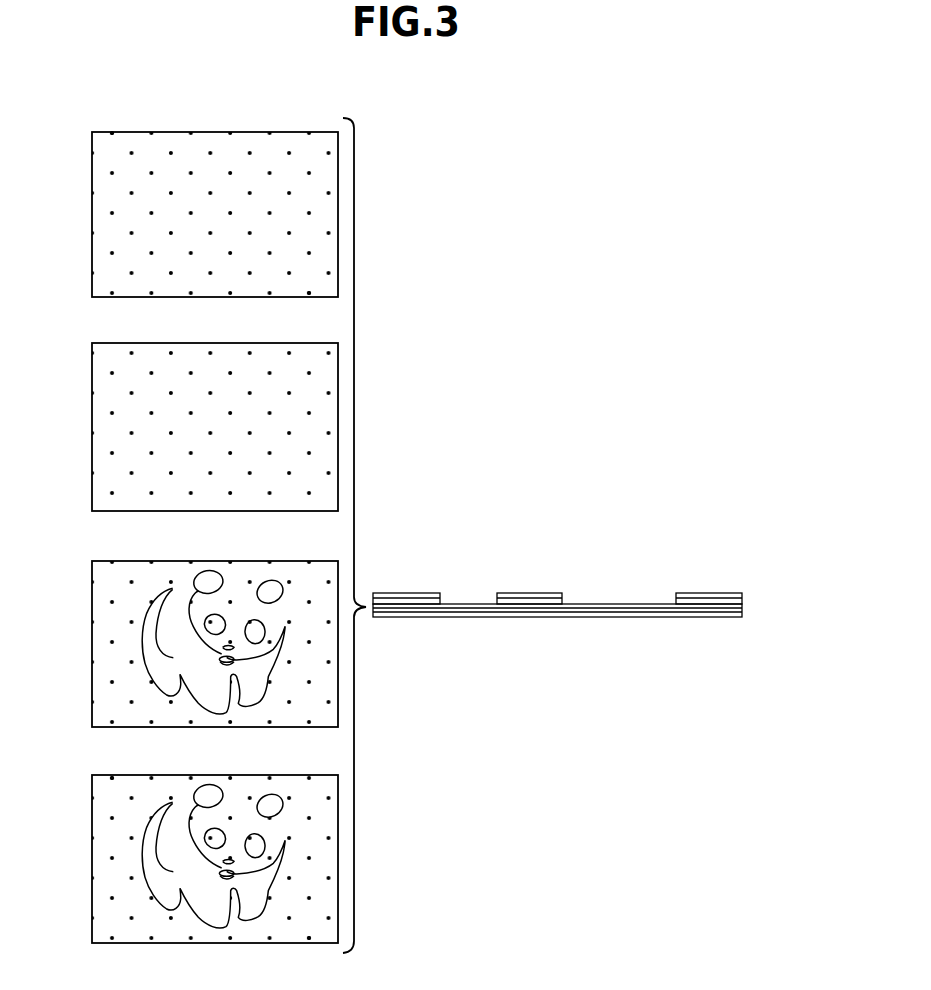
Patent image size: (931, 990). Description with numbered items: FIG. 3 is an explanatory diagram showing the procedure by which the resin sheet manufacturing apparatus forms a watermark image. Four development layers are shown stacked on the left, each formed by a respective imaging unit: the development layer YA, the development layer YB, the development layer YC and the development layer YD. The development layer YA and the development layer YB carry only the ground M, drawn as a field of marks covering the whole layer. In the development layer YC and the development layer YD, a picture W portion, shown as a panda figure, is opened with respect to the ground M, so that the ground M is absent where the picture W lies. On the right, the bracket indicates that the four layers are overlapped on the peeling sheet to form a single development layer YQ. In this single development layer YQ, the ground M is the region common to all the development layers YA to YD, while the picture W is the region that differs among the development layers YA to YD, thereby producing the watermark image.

The development layer YA is at (92, 207).
The development layer YB is at (92, 427).
The development layer YC is at (92, 650).
The development layer YD is at (92, 860).
The ground M is at (285, 141).
The picture W is at (253, 690).
The single development layer YQ is at (628, 617).